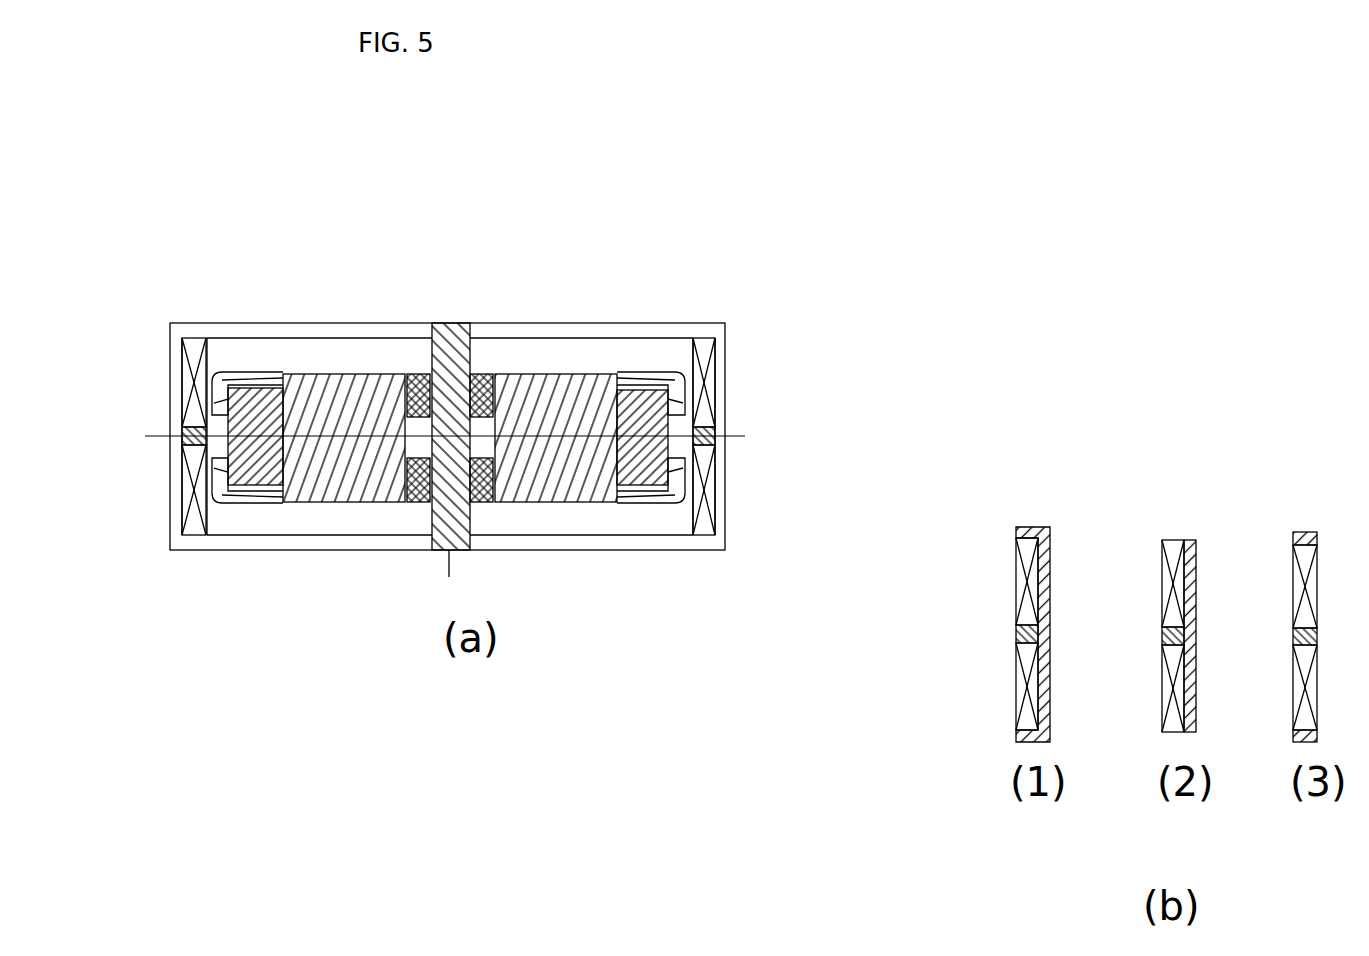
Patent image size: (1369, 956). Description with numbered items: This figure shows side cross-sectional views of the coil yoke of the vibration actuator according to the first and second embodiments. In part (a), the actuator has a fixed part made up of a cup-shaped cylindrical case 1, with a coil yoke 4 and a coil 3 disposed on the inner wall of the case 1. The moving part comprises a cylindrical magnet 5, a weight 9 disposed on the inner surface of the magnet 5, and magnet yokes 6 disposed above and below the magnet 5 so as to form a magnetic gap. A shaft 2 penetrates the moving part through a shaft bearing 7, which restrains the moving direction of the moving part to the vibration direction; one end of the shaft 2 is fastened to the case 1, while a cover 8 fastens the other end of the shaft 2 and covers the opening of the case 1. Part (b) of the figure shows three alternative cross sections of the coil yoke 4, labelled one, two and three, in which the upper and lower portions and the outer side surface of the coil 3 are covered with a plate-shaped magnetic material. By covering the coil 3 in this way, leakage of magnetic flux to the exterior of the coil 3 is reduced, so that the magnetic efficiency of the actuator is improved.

The case 1 is at (177, 323).
The shaft 2 is at (450, 323).
The coil 3 is at (708, 383).
The coil yoke 4 is at (1048, 533).
The magnet 5 is at (633, 383).
The magnet yoke 6 is at (657, 380).
The shaft bearing 7 is at (487, 377).
The cover 8 is at (334, 327).
The weight 9 is at (510, 383).